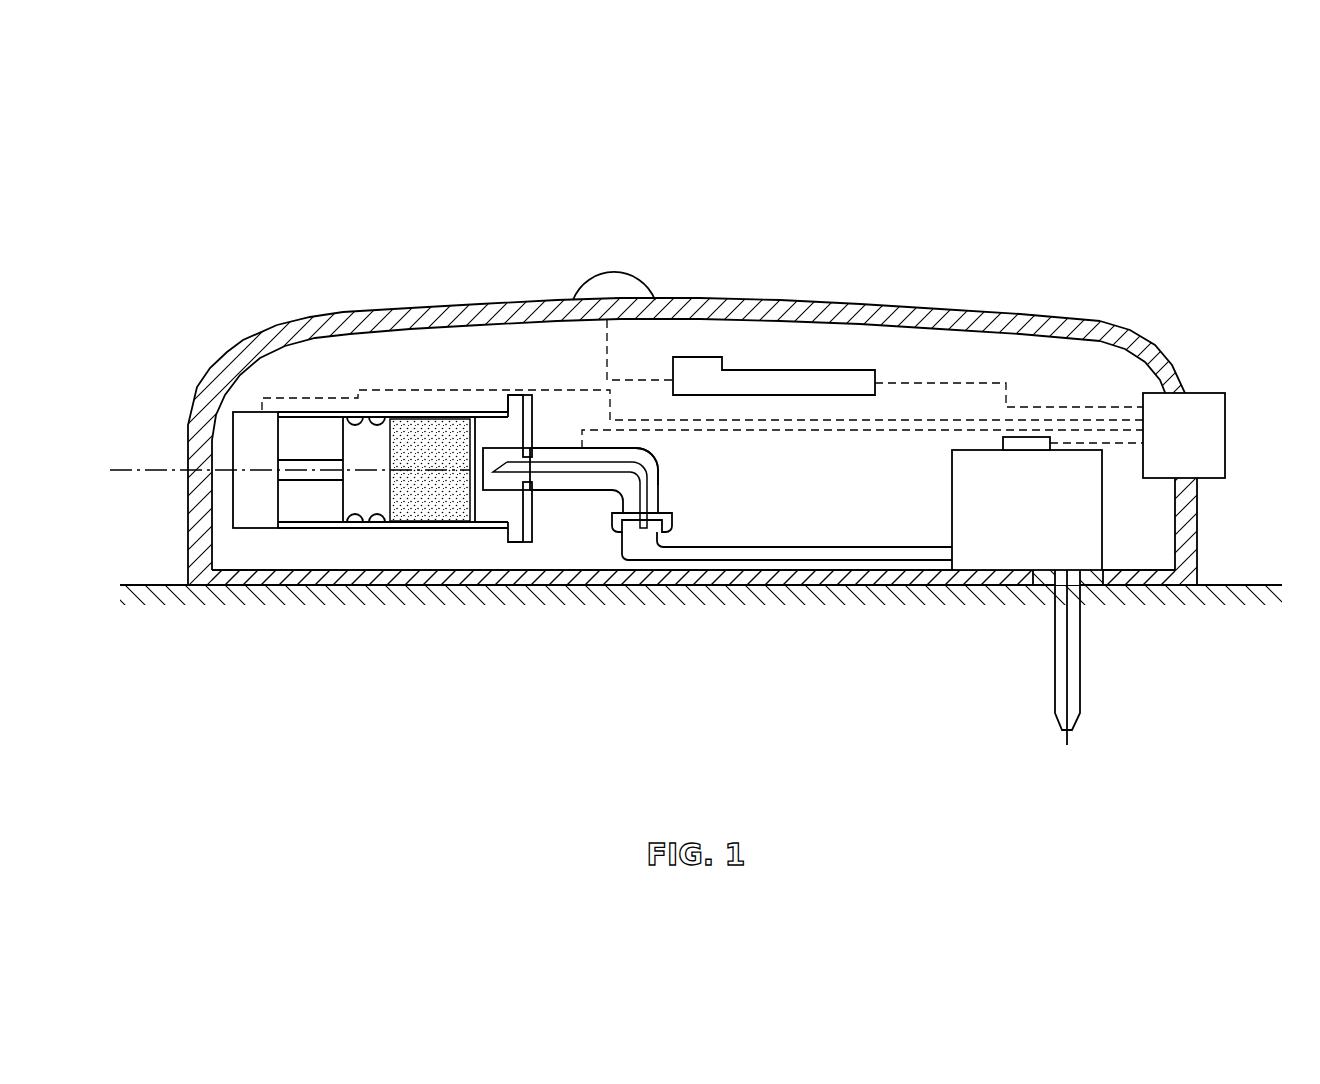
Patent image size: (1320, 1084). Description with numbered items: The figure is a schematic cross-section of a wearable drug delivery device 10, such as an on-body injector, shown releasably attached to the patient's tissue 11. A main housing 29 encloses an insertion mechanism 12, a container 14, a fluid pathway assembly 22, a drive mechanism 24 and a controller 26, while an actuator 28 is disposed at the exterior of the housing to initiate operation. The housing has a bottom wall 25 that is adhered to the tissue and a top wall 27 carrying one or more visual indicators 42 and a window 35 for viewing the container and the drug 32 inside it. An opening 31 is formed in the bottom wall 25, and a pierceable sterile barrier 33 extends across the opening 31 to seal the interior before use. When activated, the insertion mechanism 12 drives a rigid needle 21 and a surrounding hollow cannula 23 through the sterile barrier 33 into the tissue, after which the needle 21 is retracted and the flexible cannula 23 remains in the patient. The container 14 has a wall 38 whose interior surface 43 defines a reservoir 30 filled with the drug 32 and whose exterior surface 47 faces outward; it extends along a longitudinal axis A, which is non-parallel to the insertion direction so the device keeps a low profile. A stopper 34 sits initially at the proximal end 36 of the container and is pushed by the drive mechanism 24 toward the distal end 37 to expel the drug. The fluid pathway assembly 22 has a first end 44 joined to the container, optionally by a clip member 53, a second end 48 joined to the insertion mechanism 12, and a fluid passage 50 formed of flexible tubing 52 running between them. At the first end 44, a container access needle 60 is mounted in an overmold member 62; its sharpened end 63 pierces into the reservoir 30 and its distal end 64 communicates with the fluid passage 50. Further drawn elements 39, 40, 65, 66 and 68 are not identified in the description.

The drug delivery device 10 is at (209, 174).
The patient's tissue 11 is at (1262, 582).
The insertion mechanism 12 is at (1108, 488).
The container 14 is at (445, 512).
The needle 21 is at (1069, 685).
The fluid pathway assembly 22 is at (746, 511).
The hollow cannula 23 is at (1083, 644).
The drive mechanism 24 is at (230, 498).
The bottom wall 25 is at (252, 582).
The controller 26 is at (838, 365).
The top wall 27 is at (209, 395).
The actuator 28 is at (1210, 428).
The main housing 29 is at (1096, 316).
The reservoir 30 is at (419, 481).
The opening 31 is at (1035, 598).
The drug 32 is at (476, 432).
The pierceable sterile barrier 33 is at (1093, 566).
The stopper 34 is at (367, 500).
The window 35 is at (408, 317).
The proximal end 36 is at (290, 406).
The distal end 37 is at (496, 422).
The wall 38 is at (400, 418).
The reservoir bottom wall 39 is at (413, 541).
The fluid conduit 40 is at (567, 492).
The visual indicators 42 is at (624, 290).
The interior surface 43 is at (330, 520).
The first end 44 is at (559, 423).
The exterior surface 47 is at (348, 413).
The second end 48 is at (898, 521).
The fluid passage 50 is at (785, 561).
The flexible tubing 52 is at (860, 548).
The clip member 53 is at (537, 412).
The container access needle 60 is at (563, 483).
The overmold member 62 is at (663, 458).
The sharpened end 63 is at (475, 402).
The distal end 64 is at (657, 534).
The lower septum 65 is at (537, 548).
The connector elbow 66 is at (674, 530).
The nozzle body 68 is at (494, 487).
The longitudinal axis A is at (118, 467).